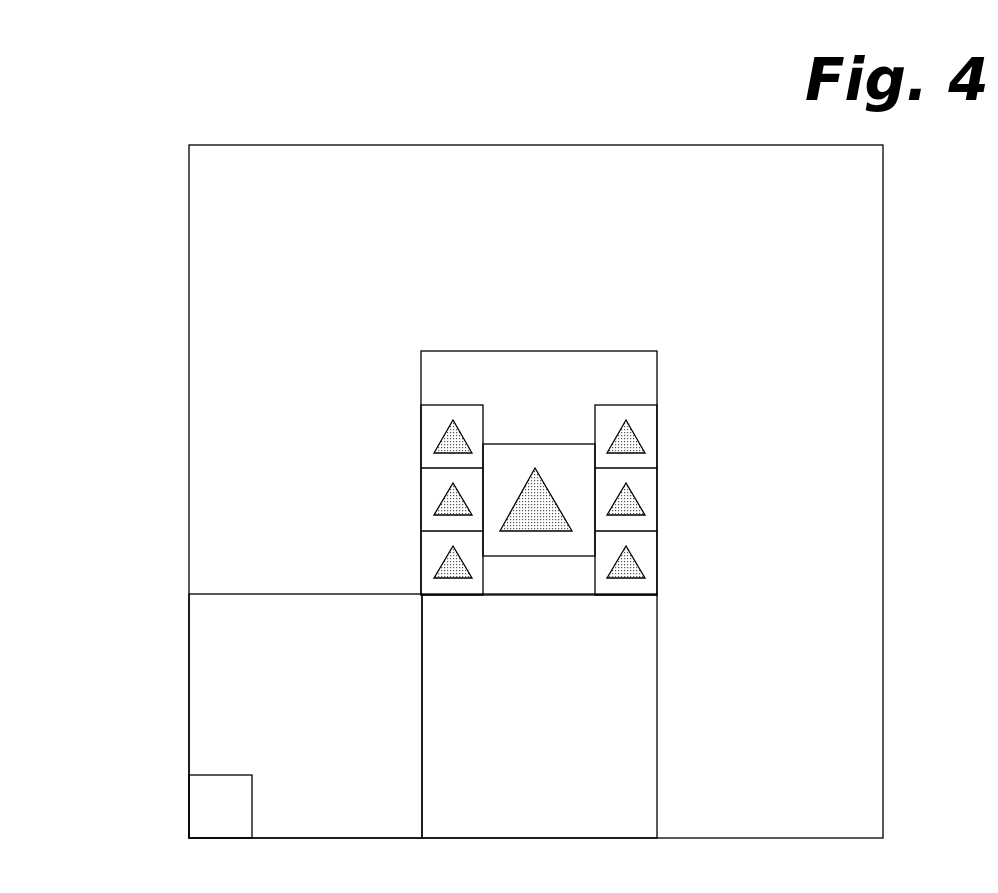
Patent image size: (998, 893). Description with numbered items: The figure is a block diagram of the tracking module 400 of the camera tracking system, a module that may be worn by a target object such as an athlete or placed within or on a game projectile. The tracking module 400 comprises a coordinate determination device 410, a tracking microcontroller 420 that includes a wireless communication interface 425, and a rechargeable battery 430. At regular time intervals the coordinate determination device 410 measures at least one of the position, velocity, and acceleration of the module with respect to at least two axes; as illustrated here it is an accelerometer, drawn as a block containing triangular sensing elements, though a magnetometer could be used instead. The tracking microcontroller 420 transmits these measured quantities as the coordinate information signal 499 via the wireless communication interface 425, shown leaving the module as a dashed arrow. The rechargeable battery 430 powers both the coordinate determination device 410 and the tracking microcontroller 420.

The tracking module 400 is at (536, 475).
The coordinate determination device 410 is at (539, 473).
The tracking microcontroller 420 is at (305, 716).
The wireless communication interface 425 is at (220, 806).
The rechargeable battery 430 is at (539, 716).
The coordinate information signal 499 is at (50, 838).